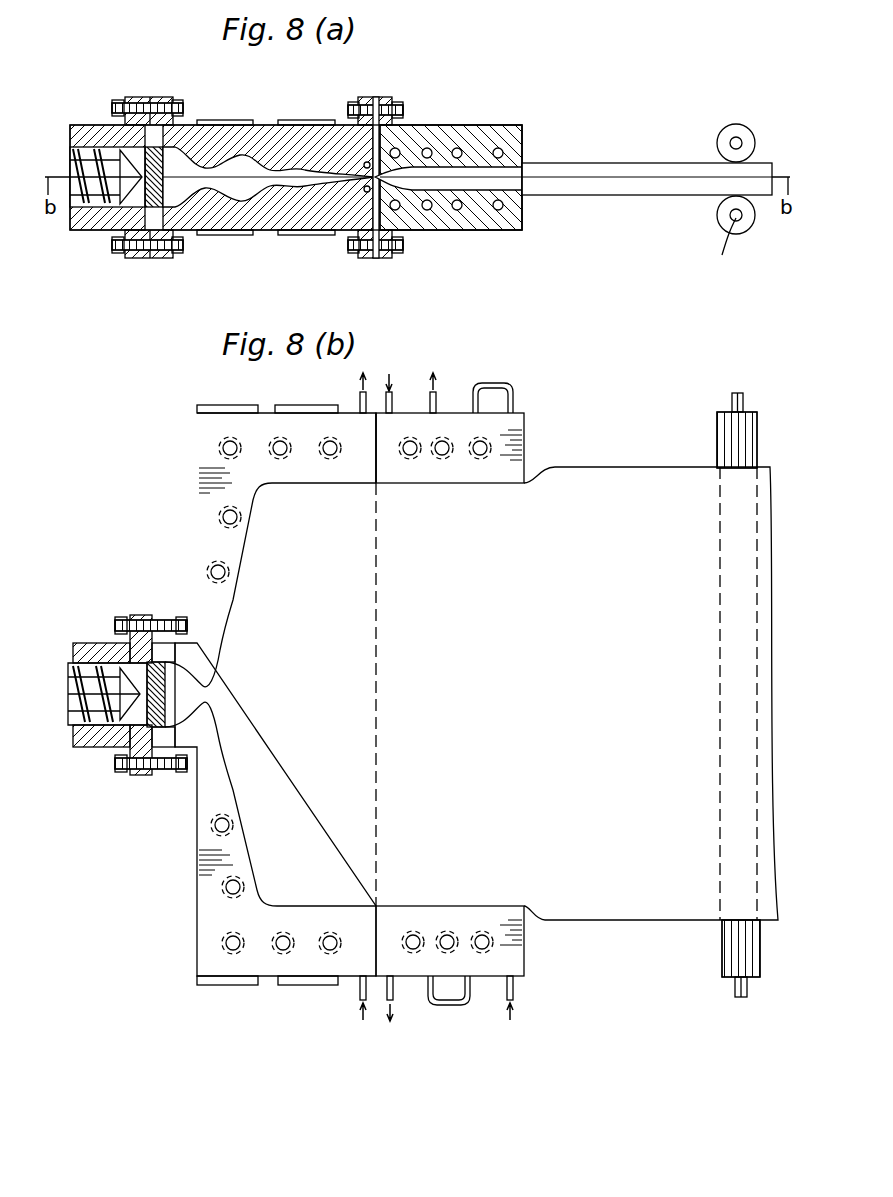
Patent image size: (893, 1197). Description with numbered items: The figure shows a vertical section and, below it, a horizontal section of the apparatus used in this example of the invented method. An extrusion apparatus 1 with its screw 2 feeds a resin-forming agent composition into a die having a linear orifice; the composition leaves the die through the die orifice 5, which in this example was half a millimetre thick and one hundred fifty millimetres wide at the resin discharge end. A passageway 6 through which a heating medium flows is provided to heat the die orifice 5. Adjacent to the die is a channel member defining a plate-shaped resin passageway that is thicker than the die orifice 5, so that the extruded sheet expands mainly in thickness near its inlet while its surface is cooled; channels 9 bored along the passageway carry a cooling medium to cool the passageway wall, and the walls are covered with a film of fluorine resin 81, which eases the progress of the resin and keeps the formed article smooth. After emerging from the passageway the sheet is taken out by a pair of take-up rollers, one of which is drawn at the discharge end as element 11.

The extrusion apparatus 1 is at (108, 232).
The screw 2 is at (73, 233).
The die orifice 5 is at (368, 181).
The heating medium passageway 6 is at (377, 153).
The film of fluorine resin 81 is at (478, 170).
The cooling channels 9 is at (502, 203).
The roller 11 is at (717, 440).